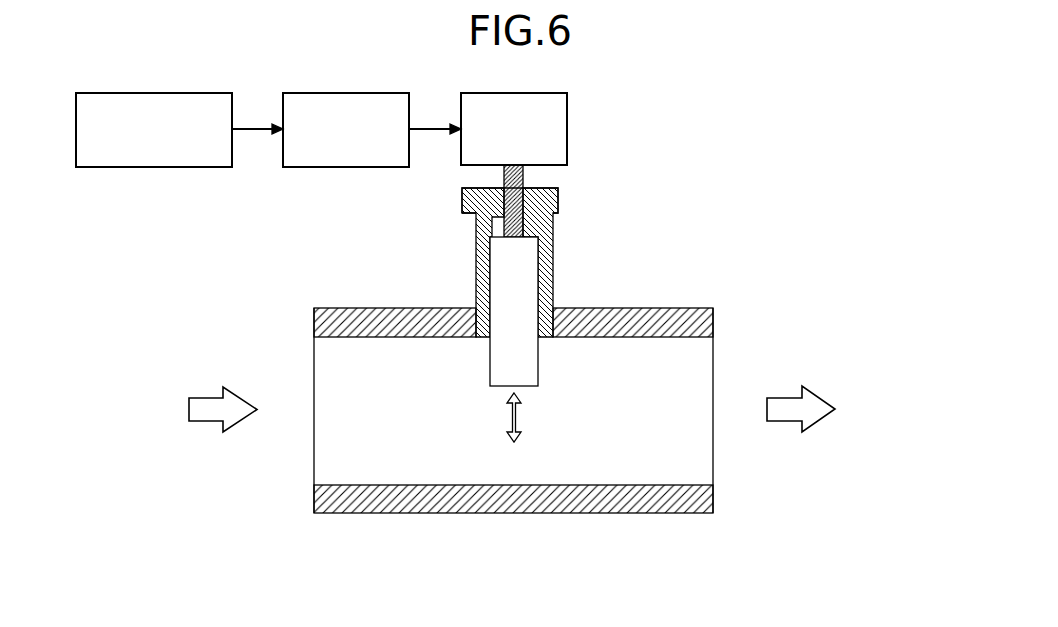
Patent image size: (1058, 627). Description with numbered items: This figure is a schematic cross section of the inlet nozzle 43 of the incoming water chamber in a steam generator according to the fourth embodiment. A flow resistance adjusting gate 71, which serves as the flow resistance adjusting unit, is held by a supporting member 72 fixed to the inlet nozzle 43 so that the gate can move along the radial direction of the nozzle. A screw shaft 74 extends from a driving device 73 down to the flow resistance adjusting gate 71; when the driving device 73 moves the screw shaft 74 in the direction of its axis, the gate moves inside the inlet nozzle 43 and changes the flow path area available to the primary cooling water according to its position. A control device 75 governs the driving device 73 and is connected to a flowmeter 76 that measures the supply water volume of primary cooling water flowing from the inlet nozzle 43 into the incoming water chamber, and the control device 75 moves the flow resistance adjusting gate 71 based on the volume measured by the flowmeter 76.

The inlet nozzle 43 is at (683, 325).
The flow resistance adjusting gate 71 is at (518, 282).
The supporting member 72 is at (476, 270).
The driving device 73 is at (567, 132).
The screw shaft 74 is at (525, 197).
The control device 75 is at (343, 93).
The flowmeter 76 is at (179, 93).